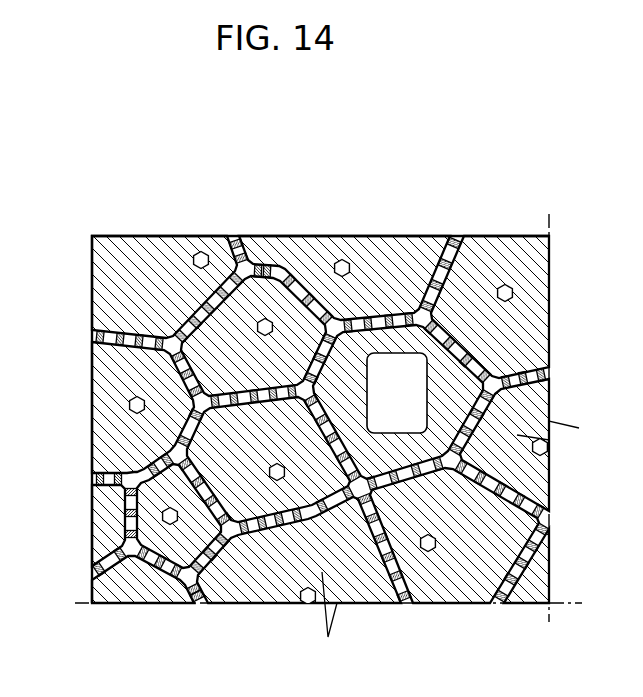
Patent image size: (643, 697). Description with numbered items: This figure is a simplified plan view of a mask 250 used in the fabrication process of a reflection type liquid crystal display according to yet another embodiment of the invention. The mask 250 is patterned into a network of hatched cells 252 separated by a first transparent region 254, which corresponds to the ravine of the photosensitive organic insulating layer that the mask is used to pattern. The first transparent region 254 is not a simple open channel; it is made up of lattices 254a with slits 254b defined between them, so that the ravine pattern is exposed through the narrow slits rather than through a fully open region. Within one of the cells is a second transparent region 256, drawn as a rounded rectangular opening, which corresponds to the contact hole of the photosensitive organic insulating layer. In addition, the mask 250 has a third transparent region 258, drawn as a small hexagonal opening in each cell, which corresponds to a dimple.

The mask 250 is at (106, 144).
The hatched island region 252 is at (407, 262).
The first transparent region 254 is at (272, 152).
The lattice 254a is at (251, 237).
The slit 254b is at (208, 237).
The second transparent region 256 is at (410, 387).
The third transparent region 258 is at (342, 258).